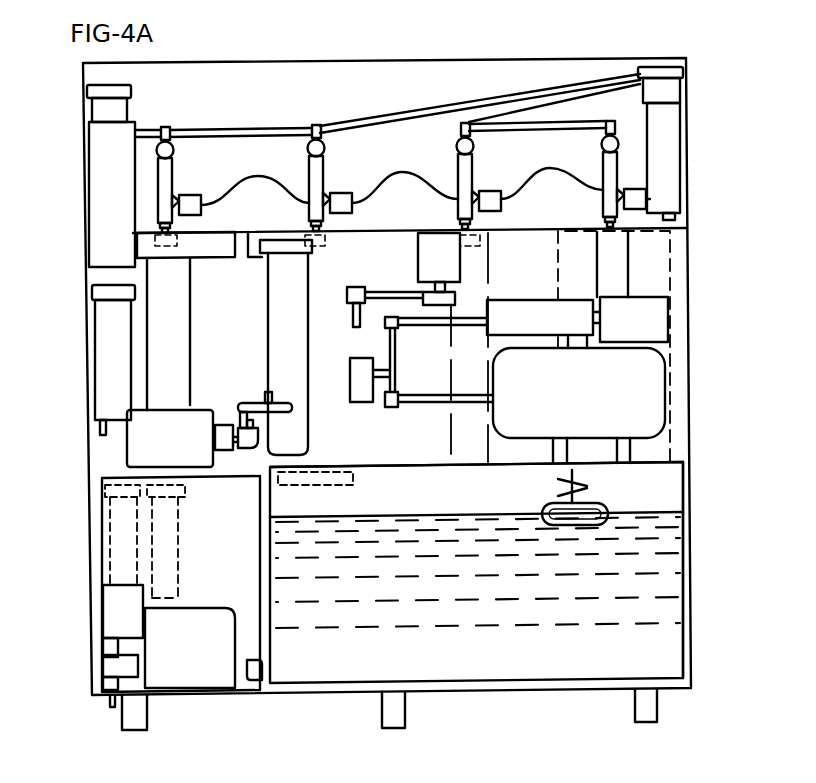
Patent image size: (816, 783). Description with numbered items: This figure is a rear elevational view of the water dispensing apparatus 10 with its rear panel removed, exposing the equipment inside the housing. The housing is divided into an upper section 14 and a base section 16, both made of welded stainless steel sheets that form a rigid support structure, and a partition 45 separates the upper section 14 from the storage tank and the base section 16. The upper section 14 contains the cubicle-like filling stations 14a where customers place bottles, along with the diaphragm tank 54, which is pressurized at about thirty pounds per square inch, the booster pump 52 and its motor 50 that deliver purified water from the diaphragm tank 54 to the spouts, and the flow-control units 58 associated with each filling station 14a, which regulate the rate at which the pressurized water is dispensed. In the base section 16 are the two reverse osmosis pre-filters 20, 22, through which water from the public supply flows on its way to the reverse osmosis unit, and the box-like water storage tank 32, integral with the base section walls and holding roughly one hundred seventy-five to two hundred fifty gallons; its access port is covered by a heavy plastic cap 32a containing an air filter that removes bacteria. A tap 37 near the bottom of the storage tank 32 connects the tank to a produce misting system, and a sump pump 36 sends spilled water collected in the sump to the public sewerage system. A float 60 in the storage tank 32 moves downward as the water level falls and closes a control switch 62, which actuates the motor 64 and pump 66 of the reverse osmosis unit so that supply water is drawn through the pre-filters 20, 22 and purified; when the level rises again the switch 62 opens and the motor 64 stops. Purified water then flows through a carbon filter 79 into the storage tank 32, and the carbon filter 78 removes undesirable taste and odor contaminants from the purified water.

The water dispensing apparatus 10 is at (695, 252).
The upper section 14 is at (76, 275).
The filling station 14a is at (652, 251).
The base section 16 is at (697, 560).
The reverse osmosis pre-filter 20 is at (120, 518).
The reverse osmosis pre-filter 22 is at (160, 557).
The water storage tank 32 is at (688, 618).
The plastic cap 32a is at (327, 482).
The sump pump 36 is at (112, 662).
The tap 37 is at (262, 662).
The partition 45 is at (426, 466).
The motor 50 is at (657, 315).
The booster pump 52 is at (572, 309).
The diaphragm tank 54 is at (596, 410).
The flow-control unit 58 is at (308, 177).
The float 60 is at (548, 506).
The control switch 62 is at (590, 485).
The motor 64 is at (456, 280).
The pump 66 is at (452, 262).
The carbon filter 78 is at (667, 90).
The carbon filter 79 is at (117, 108).